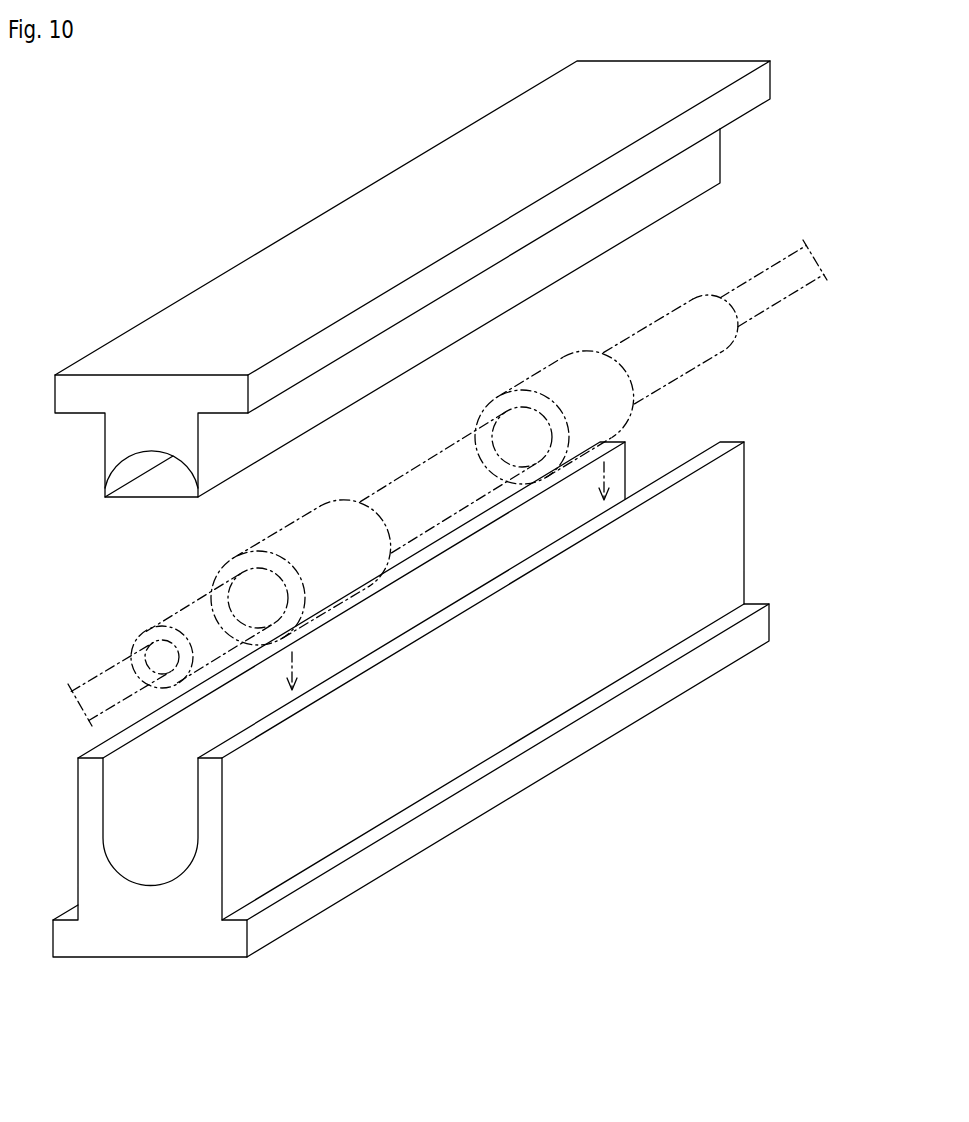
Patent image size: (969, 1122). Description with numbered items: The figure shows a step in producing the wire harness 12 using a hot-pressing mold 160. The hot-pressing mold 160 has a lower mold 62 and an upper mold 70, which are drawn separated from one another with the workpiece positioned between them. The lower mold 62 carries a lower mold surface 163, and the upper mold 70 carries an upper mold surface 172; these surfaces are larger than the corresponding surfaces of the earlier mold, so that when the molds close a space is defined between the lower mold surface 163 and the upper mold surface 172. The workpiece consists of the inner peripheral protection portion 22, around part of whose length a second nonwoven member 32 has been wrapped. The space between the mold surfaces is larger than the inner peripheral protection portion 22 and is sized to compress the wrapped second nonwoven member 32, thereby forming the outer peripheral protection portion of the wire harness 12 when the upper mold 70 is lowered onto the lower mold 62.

The hot-pressing mold 160 is at (368, 151).
The upper mold 70 is at (303, 245).
The upper mold surface 172 is at (143, 468).
The lower mold 62 is at (450, 833).
The lower mold surface 163 is at (162, 870).
The wire harness 12 is at (757, 280).
The inner peripheral protection portion 22 is at (693, 373).
The second nonwoven member 32 is at (537, 377).